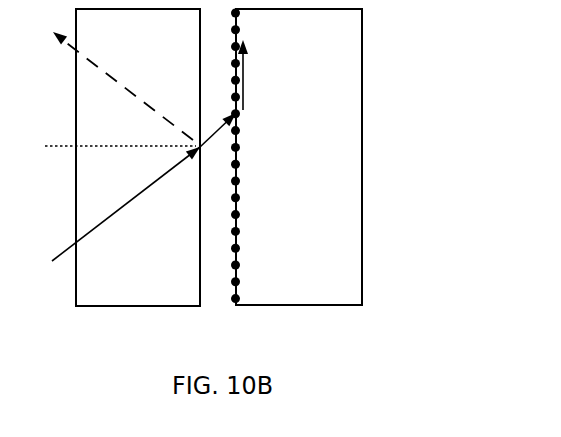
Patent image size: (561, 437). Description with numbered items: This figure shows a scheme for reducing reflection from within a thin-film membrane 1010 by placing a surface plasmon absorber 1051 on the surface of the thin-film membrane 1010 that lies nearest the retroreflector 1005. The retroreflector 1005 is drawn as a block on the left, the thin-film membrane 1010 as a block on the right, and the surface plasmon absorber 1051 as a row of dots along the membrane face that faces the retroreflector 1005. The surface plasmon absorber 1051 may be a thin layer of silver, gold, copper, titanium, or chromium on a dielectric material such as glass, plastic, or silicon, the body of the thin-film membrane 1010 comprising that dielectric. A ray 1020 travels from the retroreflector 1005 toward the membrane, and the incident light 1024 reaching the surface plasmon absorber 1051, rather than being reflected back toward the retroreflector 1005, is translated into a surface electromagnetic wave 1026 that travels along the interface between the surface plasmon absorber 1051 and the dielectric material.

The retroreflector 1005 is at (157, 291).
The thin-film membrane 1010 is at (338, 289).
The incident light ray 1020 is at (77, 242).
The incident light 1024 is at (210, 133).
The surface electromagnetic wave 1026 is at (243, 86).
The surface plasmon absorber 1051 is at (242, 215).